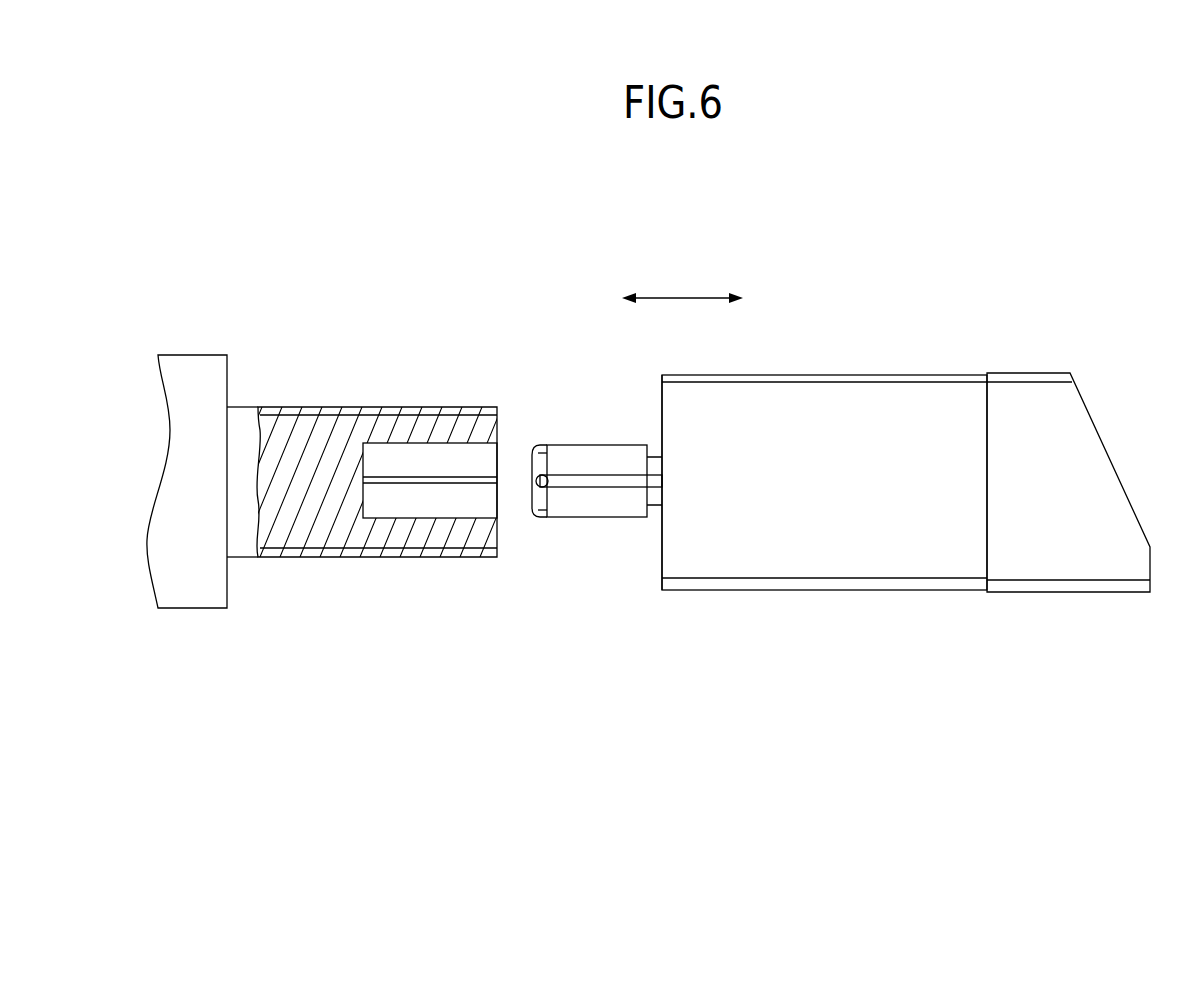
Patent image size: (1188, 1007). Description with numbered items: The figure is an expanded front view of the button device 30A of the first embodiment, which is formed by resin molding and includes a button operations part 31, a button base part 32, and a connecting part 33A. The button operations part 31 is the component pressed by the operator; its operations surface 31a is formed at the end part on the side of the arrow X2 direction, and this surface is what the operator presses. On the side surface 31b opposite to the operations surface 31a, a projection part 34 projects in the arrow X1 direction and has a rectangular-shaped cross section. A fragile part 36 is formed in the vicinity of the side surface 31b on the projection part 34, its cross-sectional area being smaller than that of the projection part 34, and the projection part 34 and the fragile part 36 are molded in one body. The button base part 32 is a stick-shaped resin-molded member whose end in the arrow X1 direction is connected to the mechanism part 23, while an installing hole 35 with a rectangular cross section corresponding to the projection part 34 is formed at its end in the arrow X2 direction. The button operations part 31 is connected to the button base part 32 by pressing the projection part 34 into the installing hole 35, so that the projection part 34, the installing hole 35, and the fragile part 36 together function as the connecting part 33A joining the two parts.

The button device 30A is at (190, 235).
The mechanism part 23 is at (190, 378).
The button base part 32 is at (345, 392).
The button operations part 31 is at (896, 366).
The operations surface 31a is at (1102, 443).
The side surface 31b is at (660, 410).
The connecting part 33A is at (576, 651).
The projection part 34 is at (583, 502).
The installing hole 35 is at (482, 500).
The fragile part 36 is at (655, 507).